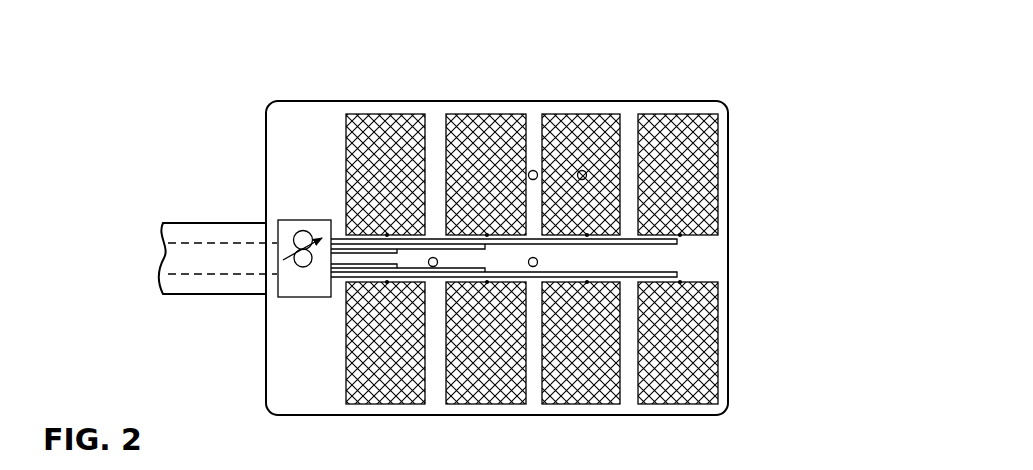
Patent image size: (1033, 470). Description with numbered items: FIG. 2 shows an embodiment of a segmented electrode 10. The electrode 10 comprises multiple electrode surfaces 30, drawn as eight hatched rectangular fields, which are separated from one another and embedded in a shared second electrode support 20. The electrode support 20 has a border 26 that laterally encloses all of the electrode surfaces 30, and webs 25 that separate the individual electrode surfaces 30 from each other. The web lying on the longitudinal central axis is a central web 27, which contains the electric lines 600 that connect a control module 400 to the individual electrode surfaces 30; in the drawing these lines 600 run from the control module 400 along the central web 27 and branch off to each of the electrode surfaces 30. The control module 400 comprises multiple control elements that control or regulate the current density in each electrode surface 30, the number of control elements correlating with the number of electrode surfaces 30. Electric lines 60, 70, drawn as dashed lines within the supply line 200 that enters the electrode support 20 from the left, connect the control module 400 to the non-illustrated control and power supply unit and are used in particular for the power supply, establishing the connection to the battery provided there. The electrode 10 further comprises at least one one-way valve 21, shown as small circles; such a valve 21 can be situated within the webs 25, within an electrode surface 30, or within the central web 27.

The segmented electrode 10 is at (465, 251).
The second electrode support 20 is at (722, 368).
The one-way valve 21 is at (582, 170).
The webs 25 is at (435, 135).
The border 26 is at (692, 110).
The central web 27 is at (693, 258).
The electrode surfaces 30 is at (697, 176).
The electric line 60 is at (160, 268).
The electric line 70 is at (160, 242).
The supply line 200 is at (173, 245).
The control module 400 is at (270, 283).
The electric lines 600 is at (662, 263).